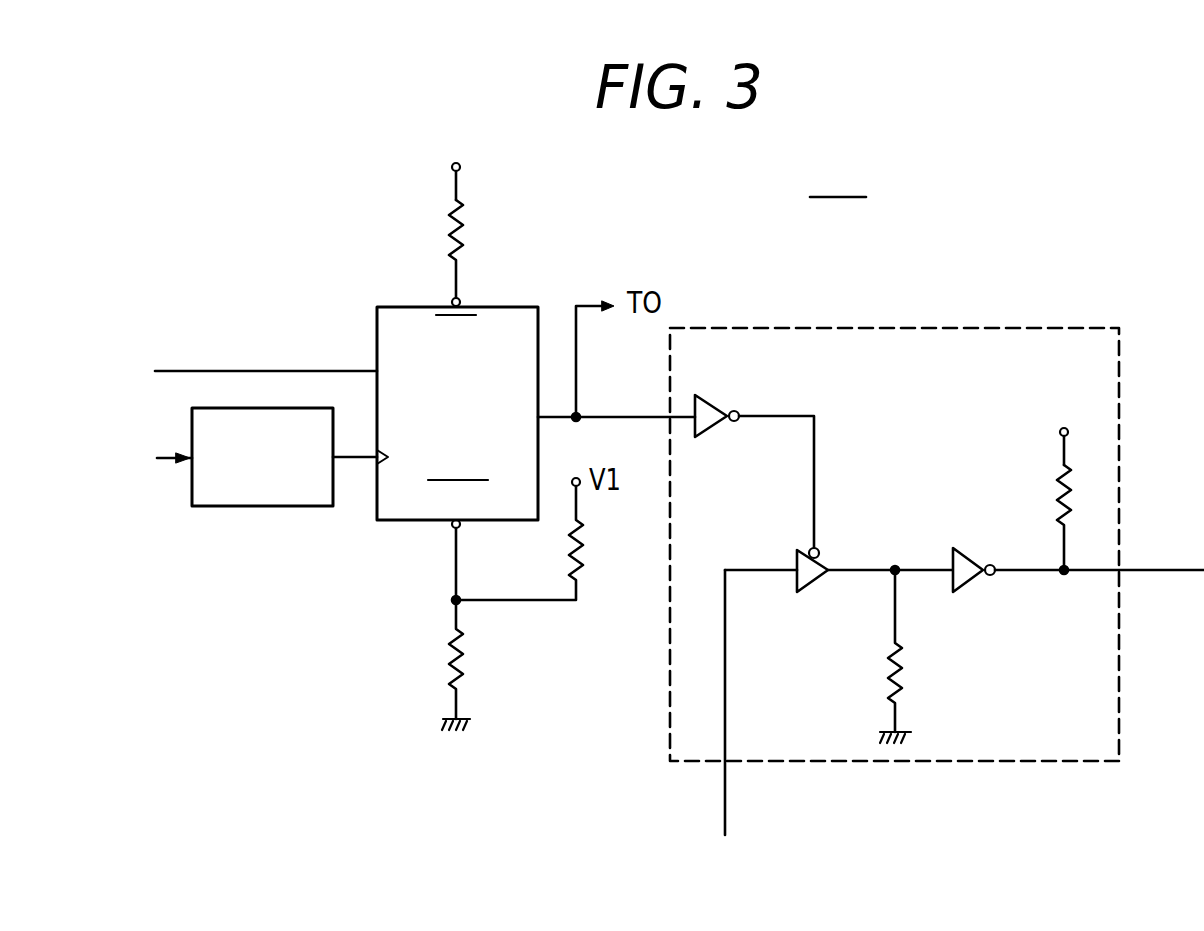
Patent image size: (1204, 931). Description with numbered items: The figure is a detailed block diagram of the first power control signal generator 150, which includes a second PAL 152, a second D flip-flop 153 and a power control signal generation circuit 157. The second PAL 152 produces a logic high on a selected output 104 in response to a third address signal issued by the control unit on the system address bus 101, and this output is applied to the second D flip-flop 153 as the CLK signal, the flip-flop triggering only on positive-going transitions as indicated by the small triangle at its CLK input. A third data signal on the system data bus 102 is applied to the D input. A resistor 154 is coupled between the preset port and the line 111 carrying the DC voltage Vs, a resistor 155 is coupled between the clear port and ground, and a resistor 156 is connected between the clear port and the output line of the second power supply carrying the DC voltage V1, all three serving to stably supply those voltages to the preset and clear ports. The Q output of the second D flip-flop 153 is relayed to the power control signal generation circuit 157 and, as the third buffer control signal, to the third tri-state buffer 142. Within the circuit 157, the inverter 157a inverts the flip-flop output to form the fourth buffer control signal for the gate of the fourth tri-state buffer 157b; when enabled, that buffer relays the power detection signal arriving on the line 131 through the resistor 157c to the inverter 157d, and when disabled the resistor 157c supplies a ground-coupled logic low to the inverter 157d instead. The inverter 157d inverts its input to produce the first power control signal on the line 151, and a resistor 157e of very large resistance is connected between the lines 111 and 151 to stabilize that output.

The system address bus 101 is at (165, 459).
The system data bus 102 is at (182, 371).
The output of the second PAL 104 is at (352, 460).
The line 111 is at (460, 163).
The line 131 is at (725, 783).
The third tri-state buffer 142 is at (642, 352).
The first power control signal generator 150 is at (838, 181).
The line 151 is at (1163, 570).
The second PAL 152 is at (262, 507).
The second D flip-flop 153 is at (393, 308).
The resistor 154 is at (489, 248).
The resistor 155 is at (487, 625).
The resistor 156 is at (555, 543).
The power control signal generation circuit 157 is at (930, 326).
The inverter 157a is at (728, 378).
The fourth tri-state buffer 157b is at (815, 586).
The resistor 157c is at (932, 656).
The inverter 157d is at (968, 588).
The resistor 157e is at (1020, 519).